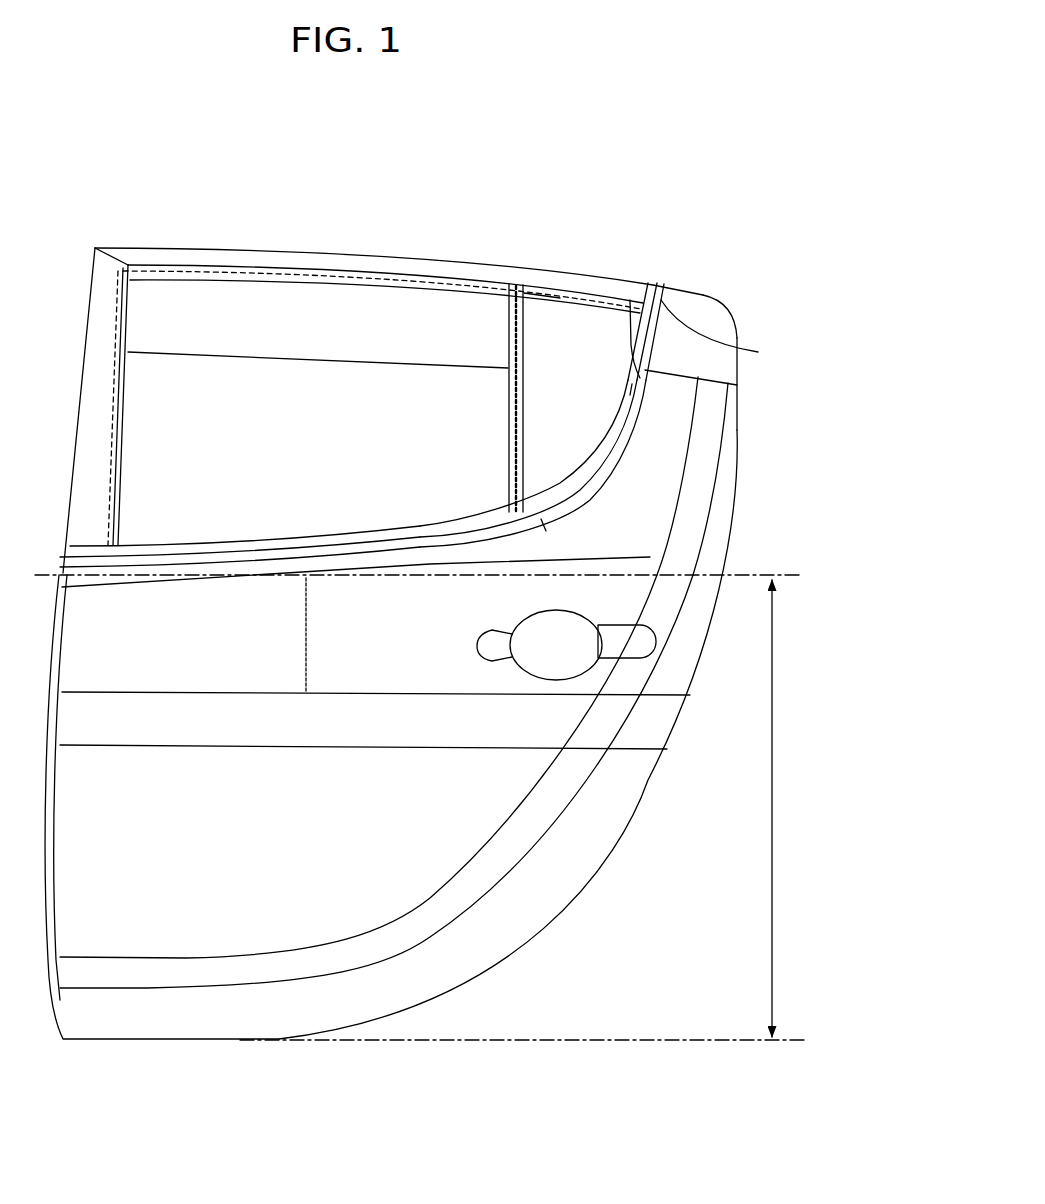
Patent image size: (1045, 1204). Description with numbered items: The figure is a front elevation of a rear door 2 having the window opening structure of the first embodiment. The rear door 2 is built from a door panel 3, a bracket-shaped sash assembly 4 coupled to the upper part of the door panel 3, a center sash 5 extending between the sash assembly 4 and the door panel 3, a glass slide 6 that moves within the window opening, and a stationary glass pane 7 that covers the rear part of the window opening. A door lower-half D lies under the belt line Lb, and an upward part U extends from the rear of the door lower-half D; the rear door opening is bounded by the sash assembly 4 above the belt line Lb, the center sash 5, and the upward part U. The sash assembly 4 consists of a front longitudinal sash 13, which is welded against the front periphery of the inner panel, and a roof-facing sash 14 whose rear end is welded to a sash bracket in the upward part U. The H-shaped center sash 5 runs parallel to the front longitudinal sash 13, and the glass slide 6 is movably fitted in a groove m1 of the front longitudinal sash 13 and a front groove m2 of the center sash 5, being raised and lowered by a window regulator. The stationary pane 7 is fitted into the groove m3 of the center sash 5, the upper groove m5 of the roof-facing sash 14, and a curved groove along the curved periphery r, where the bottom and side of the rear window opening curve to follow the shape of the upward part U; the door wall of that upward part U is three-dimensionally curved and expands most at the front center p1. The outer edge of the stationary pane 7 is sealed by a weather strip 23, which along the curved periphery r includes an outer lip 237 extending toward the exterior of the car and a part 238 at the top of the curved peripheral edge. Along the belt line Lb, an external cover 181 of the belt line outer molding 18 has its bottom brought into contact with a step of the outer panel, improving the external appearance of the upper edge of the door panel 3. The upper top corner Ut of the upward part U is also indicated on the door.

The rear door 2 is at (850, 296).
The door panel 3 is at (797, 746).
The bracket-shaped sash assembly 4 is at (260, 246).
The center sash 5 is at (507, 383).
The glass slide 6 is at (338, 382).
The stationary glass pane 7 is at (580, 317).
The front longitudinal sash 13 is at (85, 492).
The roof-facing sash 14 is at (343, 266).
The belt line outer molding 18 is at (293, 538).
The weather strip 23 is at (637, 290).
The external cover 181 is at (363, 537).
The outer lip 237 is at (567, 500).
The part at the top of the peripheral edge 238 is at (732, 335).
The groove m1 is at (123, 481).
The front groove m2 is at (503, 462).
The front groove m3 is at (520, 403).
The upper groove m5 is at (537, 302).
The front center p1 is at (632, 384).
The curved periphery r is at (567, 481).
The upward part U is at (765, 418).
The upper door top corner Ut is at (720, 318).
The belt line Lb is at (790, 577).
The door lower-half D is at (773, 935).